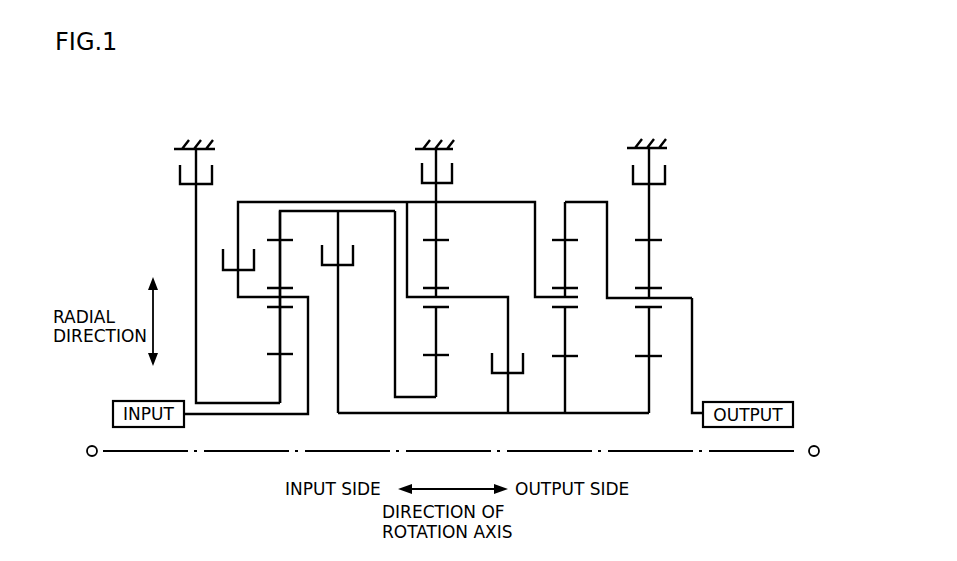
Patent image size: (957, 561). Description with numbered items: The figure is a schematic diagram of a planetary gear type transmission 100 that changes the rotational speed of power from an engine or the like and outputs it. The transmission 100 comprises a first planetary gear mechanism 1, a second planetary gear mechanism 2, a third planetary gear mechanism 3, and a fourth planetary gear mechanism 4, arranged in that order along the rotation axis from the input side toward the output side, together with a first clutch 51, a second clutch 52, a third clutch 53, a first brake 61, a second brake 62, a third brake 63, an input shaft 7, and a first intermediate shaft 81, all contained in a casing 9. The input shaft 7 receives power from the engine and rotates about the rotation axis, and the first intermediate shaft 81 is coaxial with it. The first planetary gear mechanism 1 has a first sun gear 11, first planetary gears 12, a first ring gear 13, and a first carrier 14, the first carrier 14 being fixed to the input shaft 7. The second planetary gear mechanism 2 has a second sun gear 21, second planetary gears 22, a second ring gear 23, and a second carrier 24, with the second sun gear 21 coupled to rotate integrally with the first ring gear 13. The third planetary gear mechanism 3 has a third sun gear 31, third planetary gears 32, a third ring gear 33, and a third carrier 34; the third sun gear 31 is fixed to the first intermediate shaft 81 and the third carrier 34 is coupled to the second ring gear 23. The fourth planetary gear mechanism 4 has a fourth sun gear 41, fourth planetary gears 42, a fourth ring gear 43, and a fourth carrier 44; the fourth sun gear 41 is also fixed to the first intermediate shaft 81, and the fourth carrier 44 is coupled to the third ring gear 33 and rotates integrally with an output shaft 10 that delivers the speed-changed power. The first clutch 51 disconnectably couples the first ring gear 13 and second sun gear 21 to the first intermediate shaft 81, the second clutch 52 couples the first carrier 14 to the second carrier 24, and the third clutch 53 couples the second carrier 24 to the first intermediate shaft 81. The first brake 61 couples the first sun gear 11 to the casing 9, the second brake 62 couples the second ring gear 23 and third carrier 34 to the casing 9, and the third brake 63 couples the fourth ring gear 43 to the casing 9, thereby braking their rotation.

The planetary gear type transmission 100 is at (702, 126).
The first planetary gear mechanism 1 is at (296, 266).
The second planetary gear mechanism 2 is at (449, 264).
The third planetary gear mechanism 3 is at (579, 264).
The fourth planetary gear mechanism 4 is at (662, 266).
The input shaft 7 is at (219, 415).
The casing 9 is at (204, 138).
The output shaft 10 is at (698, 414).
The first sun gear 11 is at (272, 383).
The first planetary gears 12 is at (272, 345).
The first ring gear 13 is at (272, 228).
The first carrier 14 is at (252, 299).
The second sun gear 21 is at (441, 381).
The second planetary gears 22 is at (441, 336).
The second ring gear 23 is at (435, 228).
The second carrier 24 is at (477, 297).
The third sun gear 31 is at (570, 377).
The third planetary gears 32 is at (570, 331).
The third ring gear 33 is at (563, 228).
The third carrier 34 is at (543, 300).
The fourth sun gear 41 is at (644, 390).
The fourth planetary gears 42 is at (644, 333).
The fourth ring gear 43 is at (648, 228).
The fourth carrier 44 is at (688, 297).
The first clutch 51 is at (345, 268).
The second clutch 52 is at (235, 271).
The third clutch 53 is at (503, 376).
The first brake 61 is at (178, 172).
The second brake 62 is at (420, 174).
The third brake 63 is at (631, 174).
The first intermediate shaft 81 is at (478, 414).